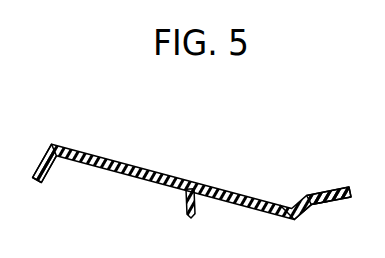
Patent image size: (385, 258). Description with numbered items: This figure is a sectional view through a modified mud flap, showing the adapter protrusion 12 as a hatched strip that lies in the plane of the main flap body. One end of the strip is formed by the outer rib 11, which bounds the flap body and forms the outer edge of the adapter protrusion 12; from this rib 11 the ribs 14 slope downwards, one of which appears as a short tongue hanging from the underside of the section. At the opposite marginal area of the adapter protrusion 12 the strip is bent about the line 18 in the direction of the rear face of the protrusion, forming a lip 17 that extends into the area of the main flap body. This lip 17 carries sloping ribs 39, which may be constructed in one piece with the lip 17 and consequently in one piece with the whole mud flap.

The outer rib 11 is at (39, 187).
The adapter protrusion 12 is at (114, 155).
The ribs 14 is at (189, 221).
The lip 17 is at (312, 193).
The line 18 is at (291, 205).
The sloping ribs 39 is at (316, 212).